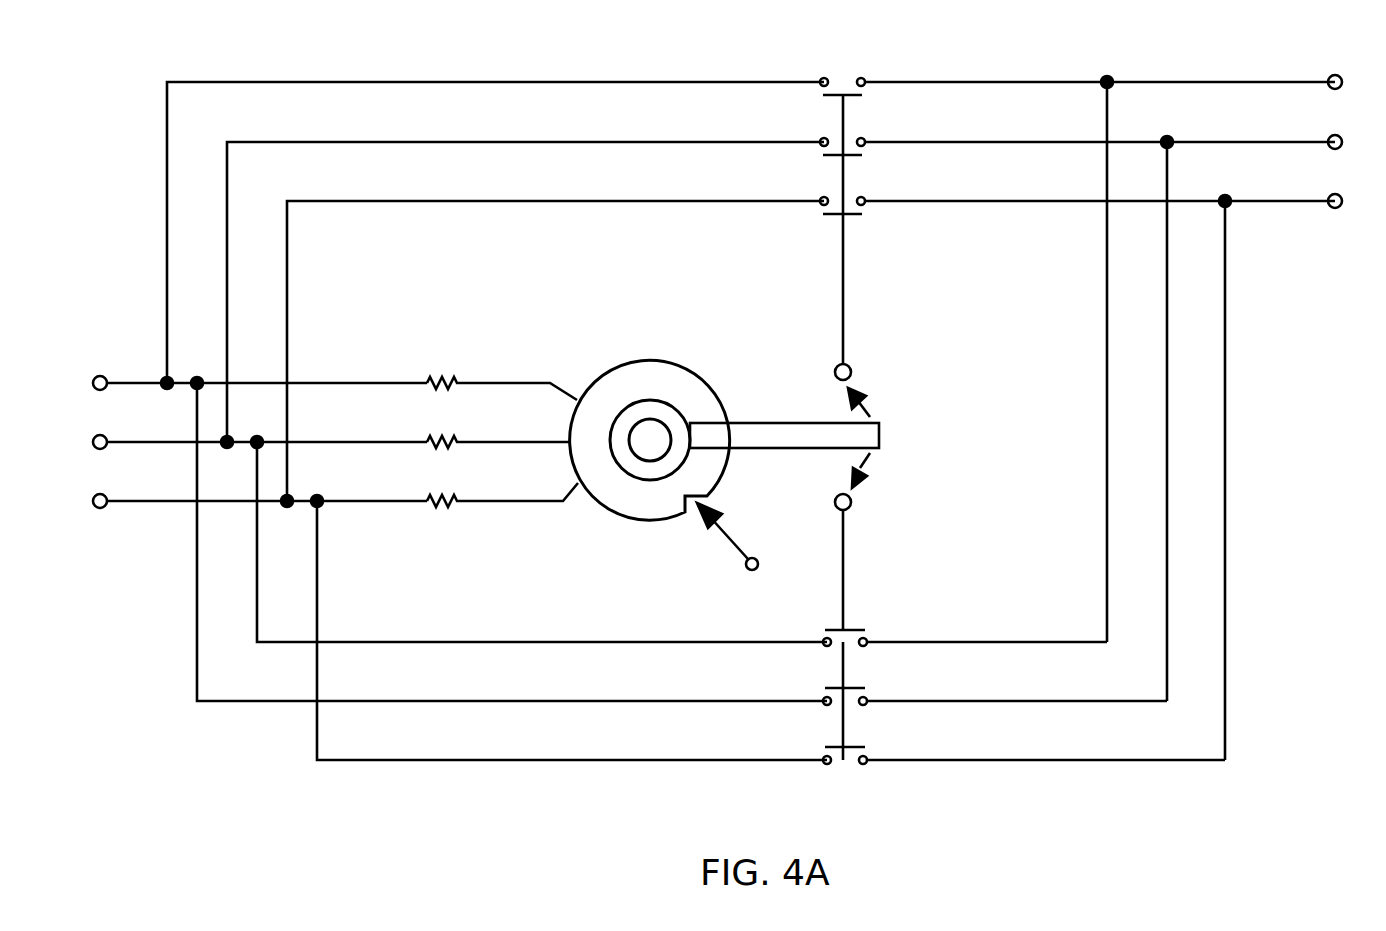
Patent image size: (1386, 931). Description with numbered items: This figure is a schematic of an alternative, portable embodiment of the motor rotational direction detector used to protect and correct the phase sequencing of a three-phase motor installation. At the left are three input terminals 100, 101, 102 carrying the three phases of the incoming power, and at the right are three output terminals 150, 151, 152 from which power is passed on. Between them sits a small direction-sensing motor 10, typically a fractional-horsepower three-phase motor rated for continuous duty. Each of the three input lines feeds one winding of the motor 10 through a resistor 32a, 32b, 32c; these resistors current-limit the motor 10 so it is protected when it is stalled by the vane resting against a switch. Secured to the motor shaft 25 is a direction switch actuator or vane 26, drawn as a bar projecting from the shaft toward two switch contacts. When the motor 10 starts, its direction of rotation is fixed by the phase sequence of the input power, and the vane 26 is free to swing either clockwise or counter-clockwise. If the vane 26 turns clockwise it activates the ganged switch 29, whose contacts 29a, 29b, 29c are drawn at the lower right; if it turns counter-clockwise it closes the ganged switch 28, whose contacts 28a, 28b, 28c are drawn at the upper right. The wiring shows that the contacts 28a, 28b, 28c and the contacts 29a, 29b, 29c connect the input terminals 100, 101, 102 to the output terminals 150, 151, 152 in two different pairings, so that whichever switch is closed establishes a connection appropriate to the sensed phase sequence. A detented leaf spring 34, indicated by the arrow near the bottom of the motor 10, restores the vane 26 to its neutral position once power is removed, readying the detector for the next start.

The direction-sensing motor 10 is at (633, 362).
The motor shaft 25 is at (650, 446).
The direction switch actuator or vane 26 is at (770, 423).
The ganged switch 28 is at (1044, 210).
The contact 28a is at (821, 79).
The contact 28b is at (821, 139).
The contact 28c is at (821, 197).
The ganged switch 29 is at (990, 650).
The contact 29a is at (825, 646).
The contact 29b is at (825, 704).
The contact 29c is at (825, 763).
The resistor 32a is at (451, 373).
The resistor 32b is at (451, 436).
The resistor 32c is at (453, 503).
The detented leaf spring 34 is at (746, 568).
The input terminal 100 is at (102, 376).
The input terminal 101 is at (105, 436).
The input terminal 102 is at (106, 508).
The output terminal 150 is at (1330, 74).
The output terminal 151 is at (1327, 134).
The output terminal 152 is at (1330, 208).